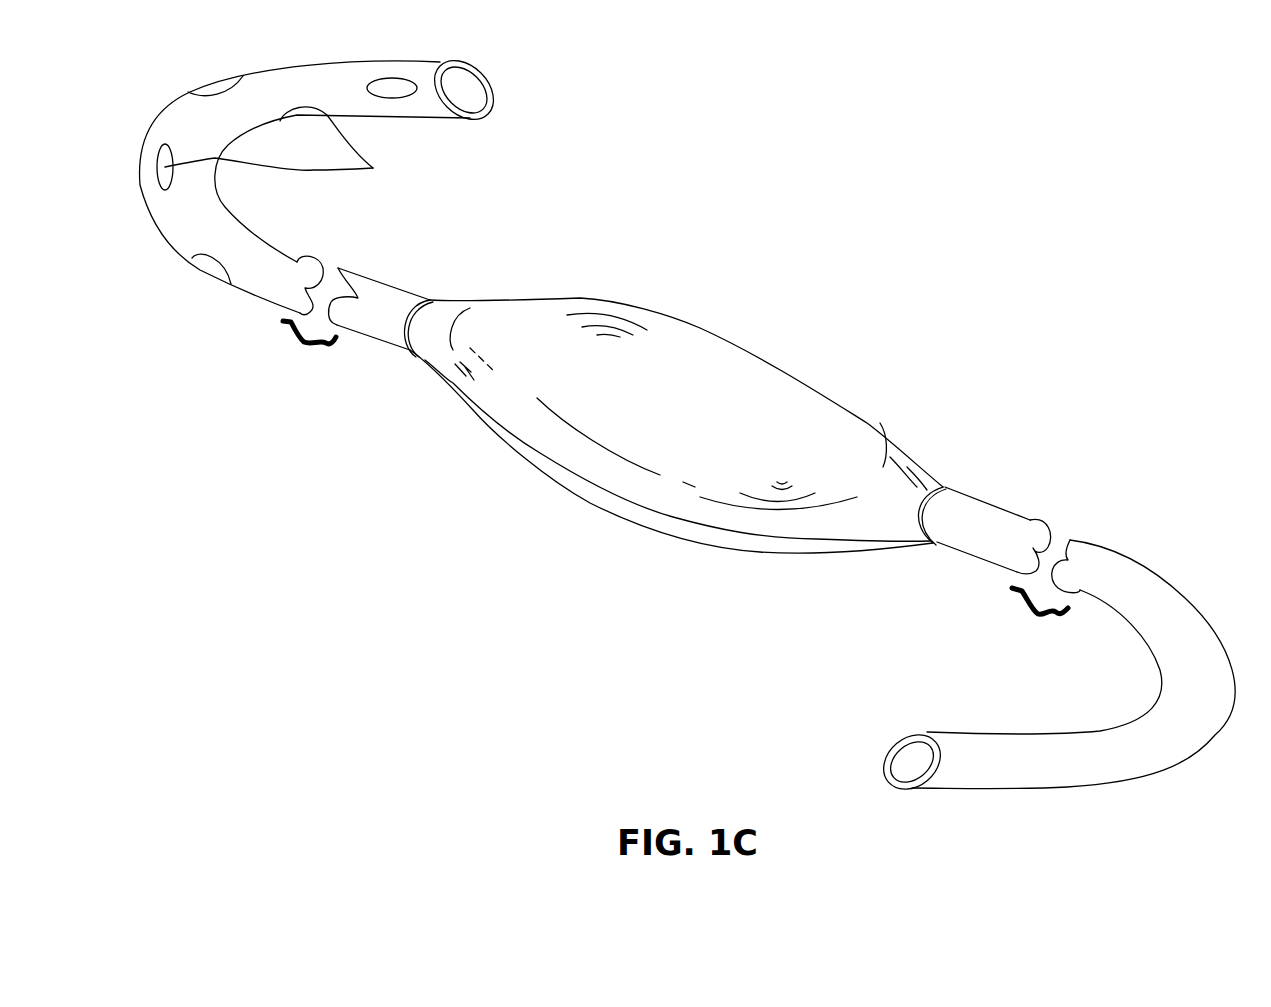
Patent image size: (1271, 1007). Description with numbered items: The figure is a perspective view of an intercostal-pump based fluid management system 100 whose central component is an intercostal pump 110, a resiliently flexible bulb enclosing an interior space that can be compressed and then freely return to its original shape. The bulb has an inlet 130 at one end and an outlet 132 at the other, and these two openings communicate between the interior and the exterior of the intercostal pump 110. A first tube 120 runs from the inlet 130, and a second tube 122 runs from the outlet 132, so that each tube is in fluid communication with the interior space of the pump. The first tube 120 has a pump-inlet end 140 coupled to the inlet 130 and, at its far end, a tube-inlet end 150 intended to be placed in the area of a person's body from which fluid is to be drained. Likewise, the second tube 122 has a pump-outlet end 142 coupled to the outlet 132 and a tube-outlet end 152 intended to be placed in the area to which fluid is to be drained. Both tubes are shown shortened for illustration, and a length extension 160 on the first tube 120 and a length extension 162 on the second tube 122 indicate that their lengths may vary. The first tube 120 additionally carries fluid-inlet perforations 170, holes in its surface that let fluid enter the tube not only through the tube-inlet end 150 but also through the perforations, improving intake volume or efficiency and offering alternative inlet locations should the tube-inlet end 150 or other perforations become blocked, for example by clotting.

The intercostal-pump based fluid management system 100 is at (905, 234).
The intercostal pump 110 is at (663, 312).
The first tube 120 is at (257, 228).
The second tube 122 is at (1100, 543).
The inlet 130 is at (427, 297).
The outlet 132 is at (943, 484).
The pump-inlet end 140 is at (363, 270).
The pump-outlet end 142 is at (1003, 510).
The tube-inlet end 150 is at (490, 82).
The tube-outlet end 152 is at (888, 763).
The length extension 160 is at (288, 336).
The length extension 162 is at (1020, 610).
The fluid-inlet perforations 170 is at (373, 168).